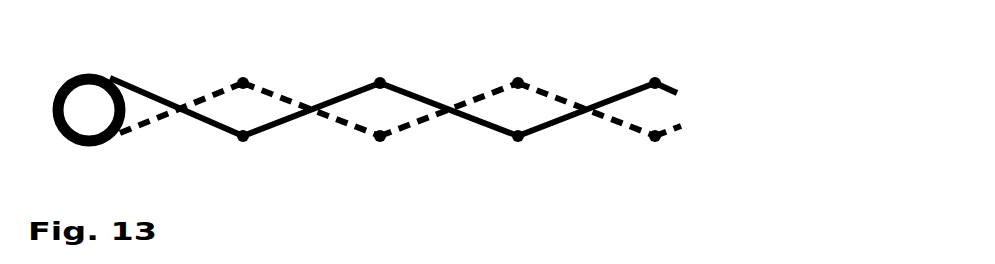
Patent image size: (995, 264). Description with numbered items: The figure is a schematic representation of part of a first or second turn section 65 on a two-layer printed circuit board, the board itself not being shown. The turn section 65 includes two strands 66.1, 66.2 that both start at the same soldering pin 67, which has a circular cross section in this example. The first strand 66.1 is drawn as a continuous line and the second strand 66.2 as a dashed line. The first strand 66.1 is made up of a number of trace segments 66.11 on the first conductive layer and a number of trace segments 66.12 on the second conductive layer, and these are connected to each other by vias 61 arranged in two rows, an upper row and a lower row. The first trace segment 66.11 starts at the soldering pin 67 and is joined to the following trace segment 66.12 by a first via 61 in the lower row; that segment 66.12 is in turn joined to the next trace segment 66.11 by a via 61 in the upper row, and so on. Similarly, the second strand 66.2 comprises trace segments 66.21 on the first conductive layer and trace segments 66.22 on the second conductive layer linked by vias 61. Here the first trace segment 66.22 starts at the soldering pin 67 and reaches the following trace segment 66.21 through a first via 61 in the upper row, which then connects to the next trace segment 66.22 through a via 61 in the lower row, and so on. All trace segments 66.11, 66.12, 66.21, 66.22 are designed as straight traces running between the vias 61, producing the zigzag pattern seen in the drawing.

The turn section 65 is at (770, 63).
The soldering pin 67 is at (83, 73).
The vias 61 is at (246, 80).
The first strand 66.1 is at (468, 109).
The trace segments on the first conductive layer 66.11 is at (145, 92).
The trace segments on the second conductive layer 66.12 is at (283, 124).
The second strand 66.2 is at (473, 122).
The trace segments on the first conductive layer 66.21 is at (281, 94).
The trace segments on the second conductive layer 66.22 is at (148, 126).